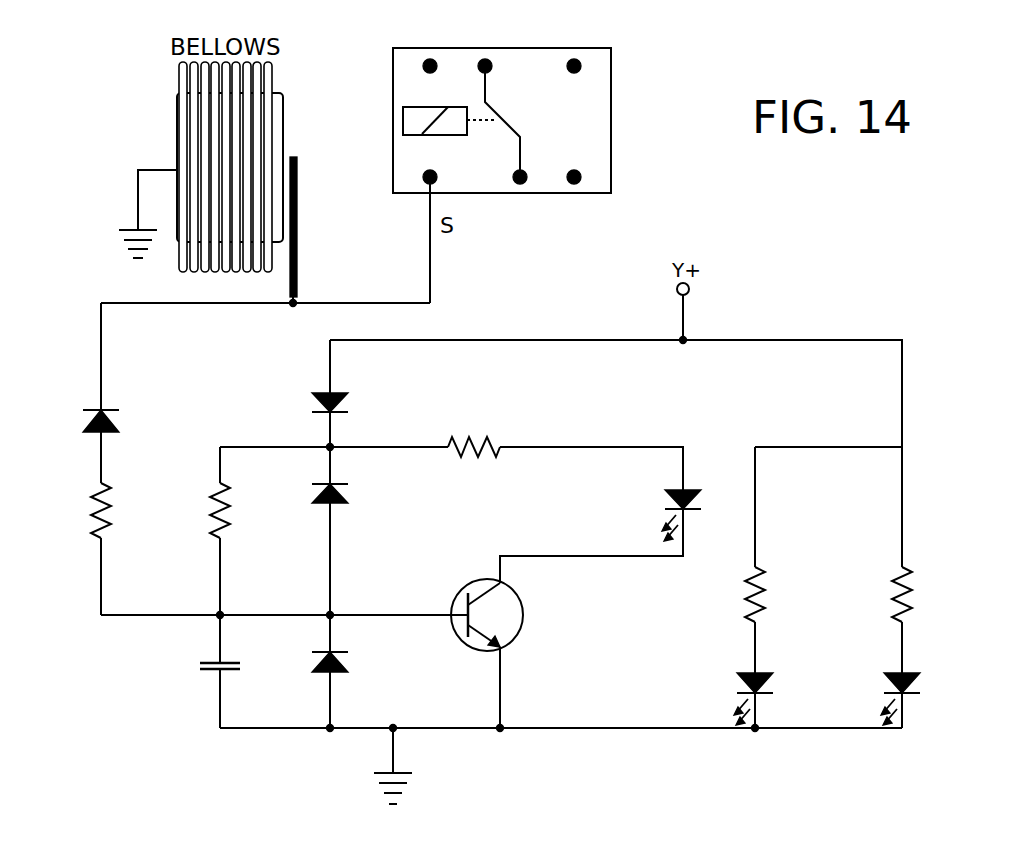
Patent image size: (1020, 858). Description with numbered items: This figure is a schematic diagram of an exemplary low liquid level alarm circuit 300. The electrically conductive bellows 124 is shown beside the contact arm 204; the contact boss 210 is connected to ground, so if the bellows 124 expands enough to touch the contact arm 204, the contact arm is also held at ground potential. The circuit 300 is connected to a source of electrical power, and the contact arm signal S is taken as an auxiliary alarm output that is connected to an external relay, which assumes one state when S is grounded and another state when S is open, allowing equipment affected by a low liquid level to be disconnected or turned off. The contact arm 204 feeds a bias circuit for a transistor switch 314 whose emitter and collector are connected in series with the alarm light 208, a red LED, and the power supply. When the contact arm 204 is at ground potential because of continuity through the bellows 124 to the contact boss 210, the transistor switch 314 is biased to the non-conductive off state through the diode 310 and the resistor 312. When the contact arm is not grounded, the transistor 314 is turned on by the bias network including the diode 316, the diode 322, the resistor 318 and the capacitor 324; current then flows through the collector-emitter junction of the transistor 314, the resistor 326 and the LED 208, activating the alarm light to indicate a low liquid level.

The bellows 124 is at (183, 93).
The contact boss 210 is at (177, 169).
The contact arm 204 is at (297, 200).
The low liquid level alarm circuit 300 is at (757, 215).
The diode 310 is at (118, 427).
The resistor 312 is at (107, 500).
The resistor 318 is at (219, 534).
The diode 316 is at (338, 402).
The resistor 326 is at (493, 446).
The alarm light 208 is at (676, 490).
The transistor switch 314 is at (521, 631).
The capacitor 324 is at (229, 667).
The diode 322 is at (339, 672).